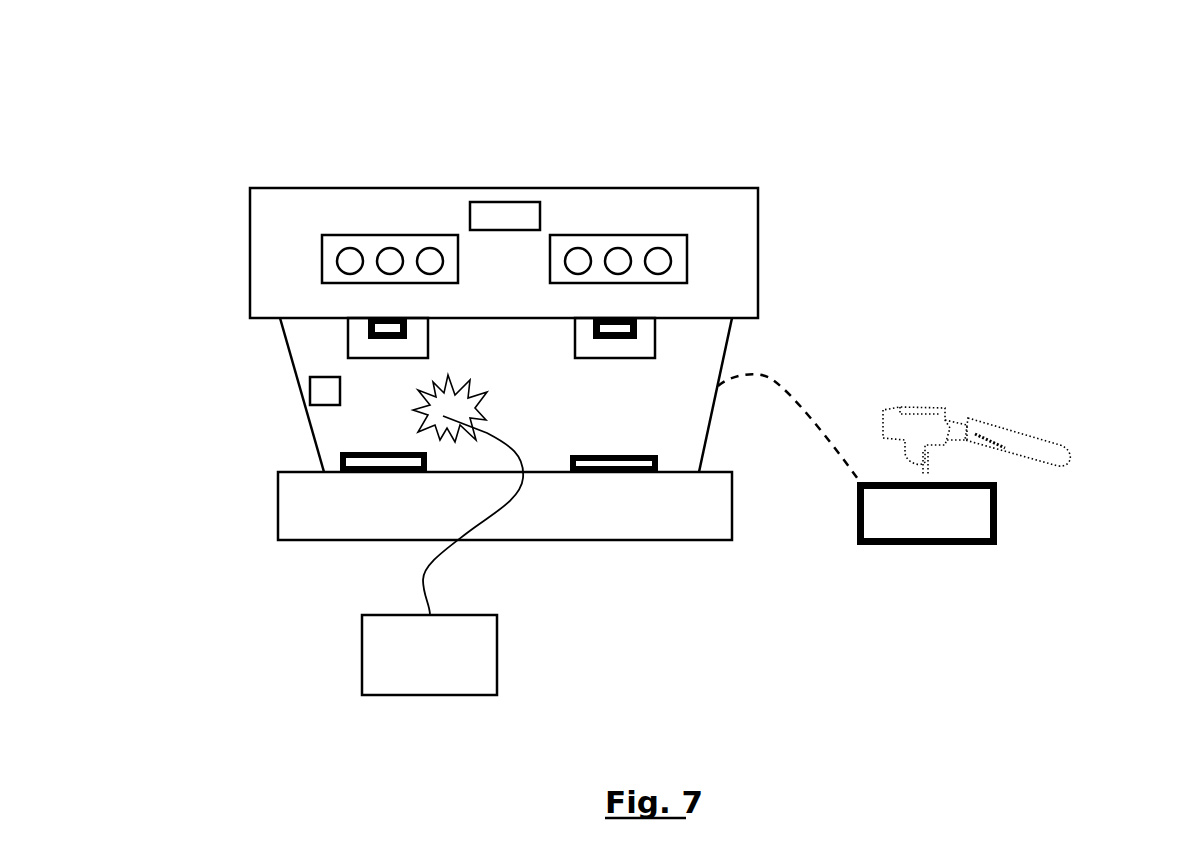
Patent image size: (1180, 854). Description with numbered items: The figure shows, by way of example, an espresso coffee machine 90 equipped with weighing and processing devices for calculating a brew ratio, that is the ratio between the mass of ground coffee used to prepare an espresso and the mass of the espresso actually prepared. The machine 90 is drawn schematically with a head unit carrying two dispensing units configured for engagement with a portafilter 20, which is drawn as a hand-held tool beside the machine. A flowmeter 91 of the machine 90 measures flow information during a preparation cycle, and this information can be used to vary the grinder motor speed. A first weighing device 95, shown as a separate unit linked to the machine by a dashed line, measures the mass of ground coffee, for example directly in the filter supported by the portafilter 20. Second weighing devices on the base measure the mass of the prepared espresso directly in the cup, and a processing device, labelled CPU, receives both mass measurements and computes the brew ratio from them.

The espresso coffee machine 90 is at (738, 125).
The flowmeter 91 is at (310, 396).
The first weighing device 95 is at (997, 500).
The portafilter 20 is at (990, 380).